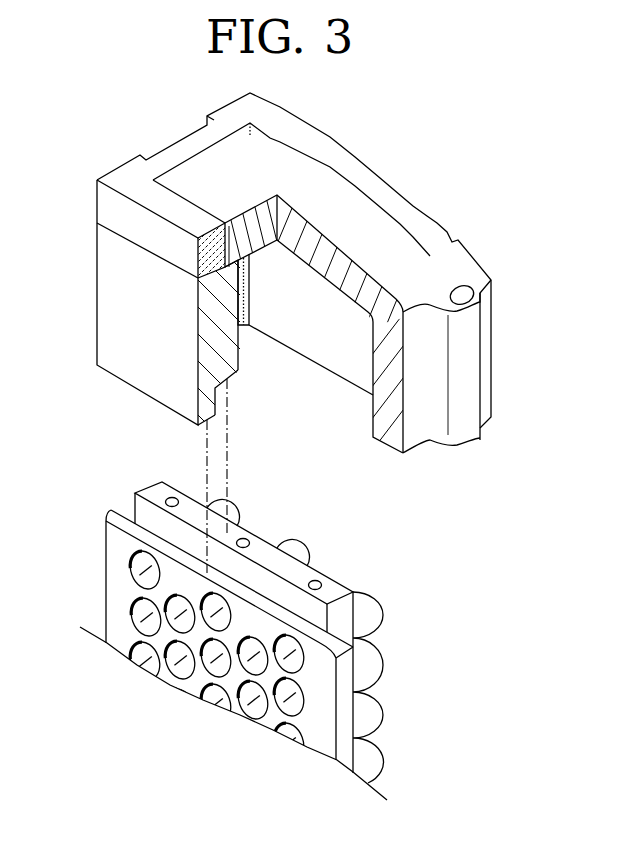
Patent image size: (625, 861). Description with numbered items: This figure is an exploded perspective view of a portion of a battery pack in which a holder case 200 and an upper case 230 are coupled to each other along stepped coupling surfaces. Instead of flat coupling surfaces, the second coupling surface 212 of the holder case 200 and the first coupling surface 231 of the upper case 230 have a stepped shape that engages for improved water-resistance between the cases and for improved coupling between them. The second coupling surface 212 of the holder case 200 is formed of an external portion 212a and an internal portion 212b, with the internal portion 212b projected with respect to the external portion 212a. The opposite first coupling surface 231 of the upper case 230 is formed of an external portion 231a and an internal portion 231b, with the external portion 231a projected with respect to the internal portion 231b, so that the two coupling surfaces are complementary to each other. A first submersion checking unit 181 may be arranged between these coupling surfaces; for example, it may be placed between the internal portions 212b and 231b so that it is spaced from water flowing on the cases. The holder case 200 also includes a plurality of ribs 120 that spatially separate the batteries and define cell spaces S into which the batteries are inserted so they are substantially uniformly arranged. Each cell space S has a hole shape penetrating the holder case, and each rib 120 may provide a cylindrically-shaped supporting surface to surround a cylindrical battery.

The upper case 230 is at (323, 333).
The first coupling surface 231 is at (279, 471).
The external portion 231a is at (210, 420).
The internal portion 231b is at (232, 380).
The first submersion checking unit 181 is at (317, 580).
The second coupling surface 212 is at (323, 627).
The external portion 212a is at (328, 643).
The internal portion 212b is at (330, 588).
The holder case 200 is at (265, 627).
The rib 120 is at (373, 762).
The cell space S is at (126, 568).